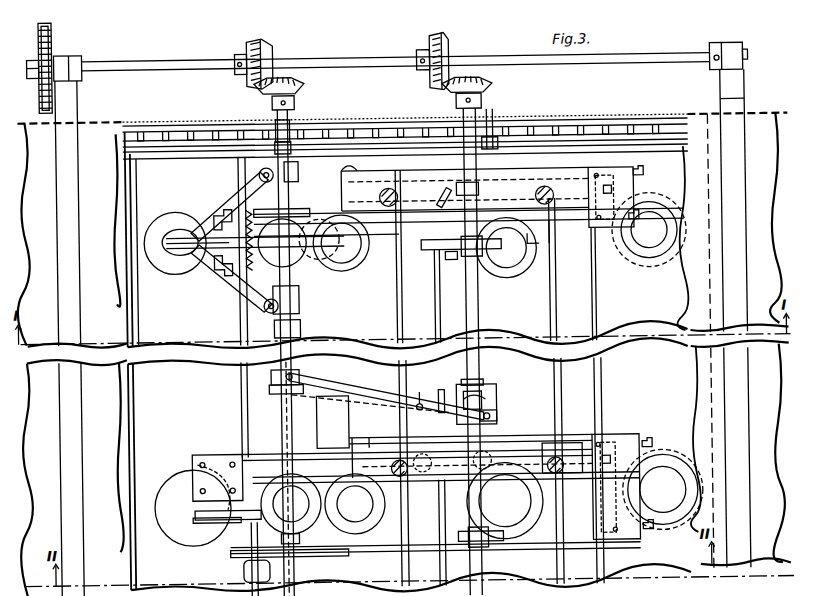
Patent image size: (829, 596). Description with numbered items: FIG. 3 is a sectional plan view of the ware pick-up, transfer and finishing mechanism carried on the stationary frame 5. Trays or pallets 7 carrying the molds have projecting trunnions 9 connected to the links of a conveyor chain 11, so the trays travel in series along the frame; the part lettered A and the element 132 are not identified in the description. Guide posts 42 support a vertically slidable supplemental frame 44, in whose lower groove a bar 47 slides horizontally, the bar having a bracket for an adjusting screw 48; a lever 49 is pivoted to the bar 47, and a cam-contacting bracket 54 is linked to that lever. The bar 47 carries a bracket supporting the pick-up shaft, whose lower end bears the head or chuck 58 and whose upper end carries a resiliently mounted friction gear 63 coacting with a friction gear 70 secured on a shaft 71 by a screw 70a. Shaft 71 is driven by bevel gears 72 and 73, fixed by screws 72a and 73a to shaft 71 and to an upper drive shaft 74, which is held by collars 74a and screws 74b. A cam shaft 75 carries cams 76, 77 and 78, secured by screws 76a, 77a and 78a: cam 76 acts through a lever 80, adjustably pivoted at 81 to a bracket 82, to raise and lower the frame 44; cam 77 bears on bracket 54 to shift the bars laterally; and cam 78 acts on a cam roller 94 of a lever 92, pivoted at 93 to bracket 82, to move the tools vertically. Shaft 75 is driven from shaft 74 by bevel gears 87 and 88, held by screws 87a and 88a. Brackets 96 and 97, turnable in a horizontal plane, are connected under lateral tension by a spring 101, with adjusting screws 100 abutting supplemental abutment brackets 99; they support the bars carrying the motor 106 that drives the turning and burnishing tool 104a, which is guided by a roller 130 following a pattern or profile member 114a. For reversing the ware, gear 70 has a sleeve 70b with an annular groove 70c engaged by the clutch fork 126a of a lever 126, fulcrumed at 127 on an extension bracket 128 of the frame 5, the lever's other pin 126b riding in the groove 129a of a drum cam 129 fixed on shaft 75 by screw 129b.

The stationary frame 5 is at (80, 148).
The trays or pallets 7 is at (557, 296).
The projecting trunnions 9 is at (494, 122).
The conveyor chain 11 is at (379, 121).
The track A is at (606, 118).
The guide posts 42 is at (550, 190).
The supplemental frame 44 is at (573, 446).
The bar 47 is at (550, 242).
The adjusting screw 48 is at (614, 353).
The lever 49 is at (360, 236).
The cam-contacting bracket 54 is at (512, 247).
The head or chuck 58 is at (322, 498).
The friction gear or disk 63 is at (322, 506).
The friction gear 70 is at (300, 452).
The screw 70a is at (287, 210).
The sleeve 70b is at (280, 430).
The annular groove 70c is at (268, 388).
The shaft 71 is at (292, 113).
The bevel or mitre gear 72 is at (303, 85).
The screw 72a is at (275, 101).
The bevel or mitre gear 73 is at (263, 46).
The screw 73a is at (242, 55).
The upper drive shaft 74 is at (333, 57).
The collars 74a is at (75, 55).
The screws 74b is at (85, 61).
The cam shaft 75 is at (479, 311).
The cam 76 is at (381, 196).
The screw 76a is at (505, 326).
The cam 77 is at (402, 247).
The screw 77a is at (427, 197).
The cam 78 is at (425, 254).
The screw 78a is at (462, 260).
The lever 80 is at (465, 179).
The sliding block adjustment pivot 81 is at (644, 173).
The bracket 82 is at (640, 186).
The bevel or mitre gear 87 is at (496, 88).
The screw 87a is at (459, 101).
The bevel or mitre gear 88 is at (447, 45).
The screw 88a is at (424, 52).
The lever 92 is at (366, 566).
The pivot 93 is at (634, 224).
The cam roller 94 is at (508, 254).
The brackets 96 is at (226, 200).
The brackets 97 is at (222, 276).
The supplemental abutment brackets 99 is at (205, 268).
The adjusting screws 100 is at (215, 211).
The spring 101 is at (264, 246).
The turning and finishing and burnishing tool 104a is at (245, 505).
The motor 106 is at (300, 328).
The pattern or profile member 114a is at (192, 531).
The lever 126 is at (369, 385).
The clutch pin or fork 126a is at (270, 373).
The pin 126b is at (496, 418).
The fulcrum 127 is at (418, 404).
The extension bracket 128 is at (369, 408).
The drum cam 129 is at (496, 394).
The groove 129a is at (495, 405).
The screw 129b is at (482, 383).
The roller 130 is at (255, 530).
The collar 132 is at (292, 545).